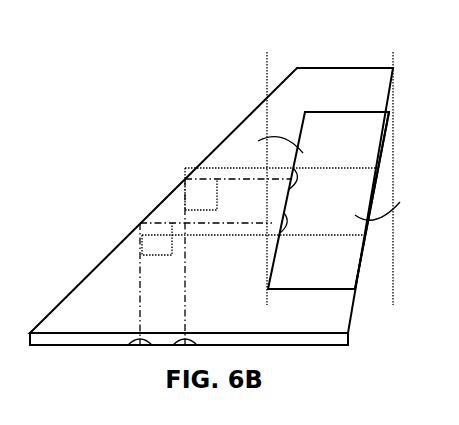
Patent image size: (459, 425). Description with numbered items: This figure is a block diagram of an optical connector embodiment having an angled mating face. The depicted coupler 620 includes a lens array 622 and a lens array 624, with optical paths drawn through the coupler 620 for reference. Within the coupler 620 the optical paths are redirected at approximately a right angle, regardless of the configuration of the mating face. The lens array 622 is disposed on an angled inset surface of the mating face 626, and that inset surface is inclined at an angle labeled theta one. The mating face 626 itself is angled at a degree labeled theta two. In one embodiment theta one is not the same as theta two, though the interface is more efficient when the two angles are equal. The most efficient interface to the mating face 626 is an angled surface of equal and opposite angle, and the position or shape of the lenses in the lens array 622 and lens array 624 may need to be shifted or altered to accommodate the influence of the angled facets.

The coupler 620 is at (245, 140).
The lens array 622 is at (287, 198).
The lens array 624 is at (161, 339).
The mating face 626 is at (383, 135).